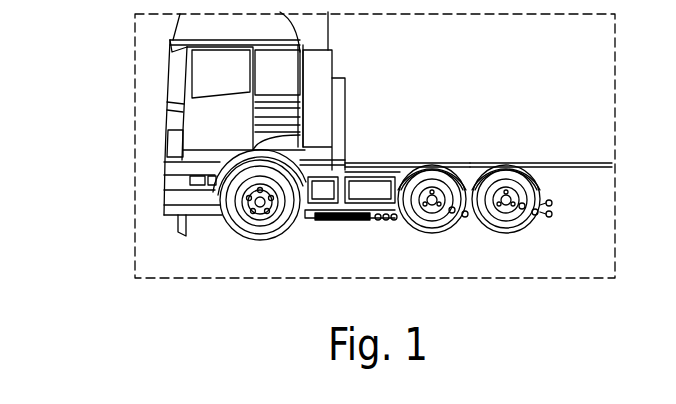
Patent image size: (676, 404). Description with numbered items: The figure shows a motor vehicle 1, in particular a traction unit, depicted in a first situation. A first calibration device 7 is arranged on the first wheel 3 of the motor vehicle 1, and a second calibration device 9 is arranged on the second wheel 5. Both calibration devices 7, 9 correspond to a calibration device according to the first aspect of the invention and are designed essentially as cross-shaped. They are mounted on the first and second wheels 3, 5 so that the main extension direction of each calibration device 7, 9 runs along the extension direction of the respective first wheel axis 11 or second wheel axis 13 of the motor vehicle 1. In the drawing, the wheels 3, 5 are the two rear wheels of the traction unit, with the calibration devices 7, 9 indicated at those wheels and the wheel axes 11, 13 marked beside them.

The motor vehicle 1 is at (93, 43).
The first wheel 3 is at (416, 126).
The second wheel 5 is at (507, 127).
The first calibration device 7 is at (421, 248).
The second calibration device 9 is at (542, 248).
The first wheel axis 11 is at (505, 216).
The second wheel axis 13 is at (553, 218).